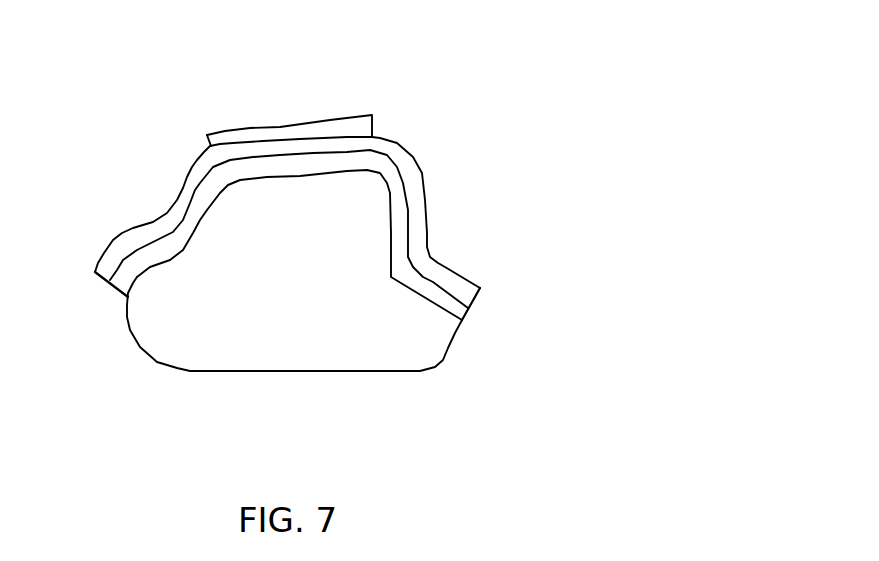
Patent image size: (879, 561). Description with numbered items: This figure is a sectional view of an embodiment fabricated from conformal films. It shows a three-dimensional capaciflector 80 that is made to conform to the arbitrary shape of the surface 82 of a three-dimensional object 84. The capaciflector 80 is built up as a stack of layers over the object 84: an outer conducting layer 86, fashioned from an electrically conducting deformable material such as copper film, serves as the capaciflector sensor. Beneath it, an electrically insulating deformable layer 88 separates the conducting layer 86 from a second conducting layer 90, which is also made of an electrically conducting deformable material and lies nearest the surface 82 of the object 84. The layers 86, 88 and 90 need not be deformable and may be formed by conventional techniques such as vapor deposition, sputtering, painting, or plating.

The three-dimensional capaciflector 80 is at (499, 123).
The surface 82 is at (299, 313).
The three-dimensional object 84 is at (247, 333).
The conducting layer 86 is at (291, 85).
The electrically insulating deformable layer 88 is at (269, 217).
The conducting layer 90 is at (334, 235).